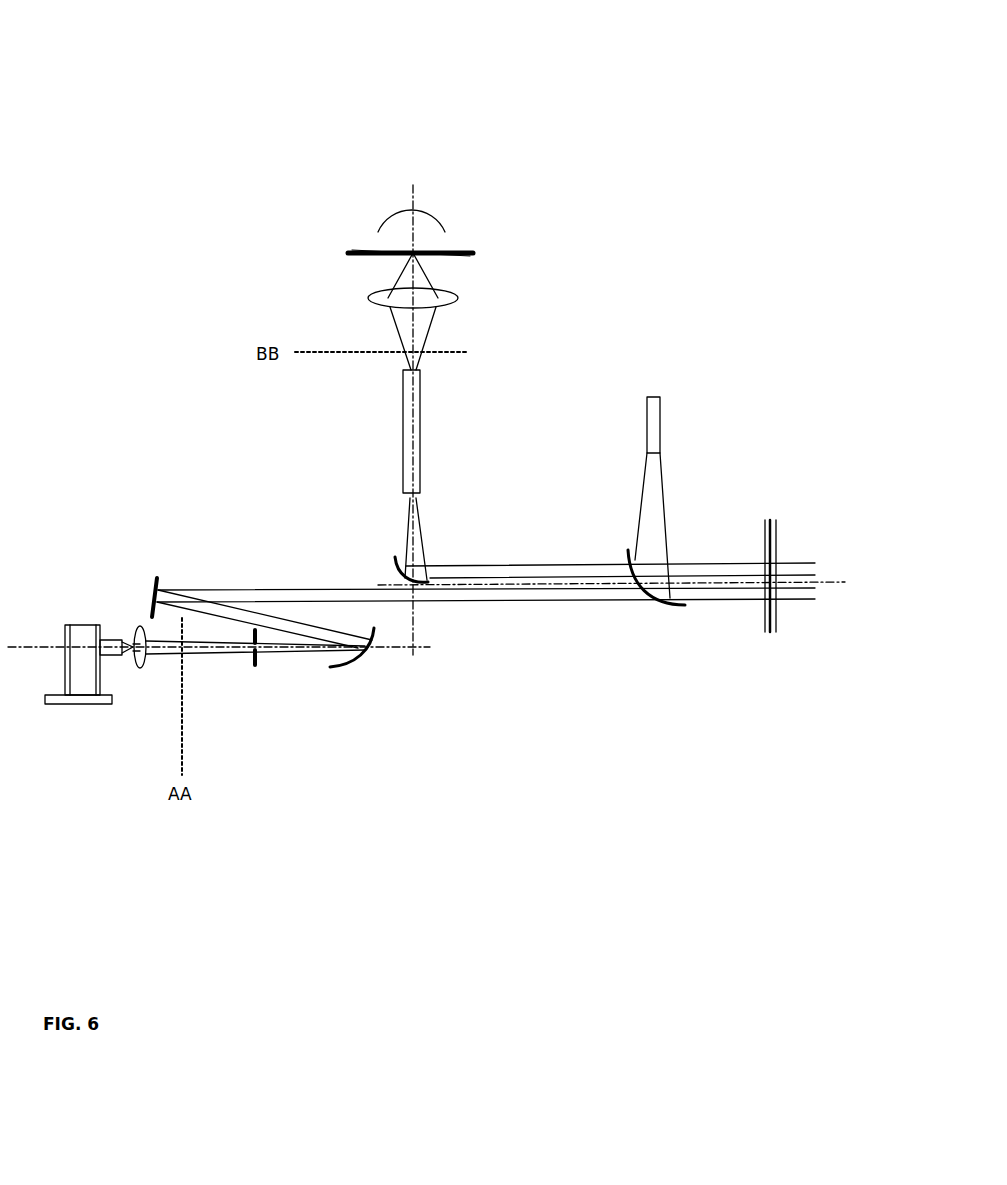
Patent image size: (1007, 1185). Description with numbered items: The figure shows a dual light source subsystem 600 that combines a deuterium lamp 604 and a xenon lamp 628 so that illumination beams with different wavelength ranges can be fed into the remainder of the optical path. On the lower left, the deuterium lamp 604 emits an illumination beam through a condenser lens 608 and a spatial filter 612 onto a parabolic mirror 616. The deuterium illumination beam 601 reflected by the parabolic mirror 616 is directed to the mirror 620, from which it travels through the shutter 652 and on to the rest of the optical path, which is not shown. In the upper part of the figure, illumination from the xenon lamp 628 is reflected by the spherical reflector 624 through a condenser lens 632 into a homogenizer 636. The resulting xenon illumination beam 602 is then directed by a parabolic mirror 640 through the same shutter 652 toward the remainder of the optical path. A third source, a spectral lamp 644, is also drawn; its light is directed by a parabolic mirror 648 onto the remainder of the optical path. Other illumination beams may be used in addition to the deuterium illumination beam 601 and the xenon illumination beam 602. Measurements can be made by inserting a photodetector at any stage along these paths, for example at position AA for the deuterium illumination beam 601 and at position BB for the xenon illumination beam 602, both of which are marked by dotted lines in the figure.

The dual light source subsystem 600 is at (473, 90).
The deuterium illumination beam 601 is at (168, 652).
The xenon illumination beam 602 is at (427, 332).
The deuterium lamp 604 is at (72, 623).
The condenser lens 608 is at (137, 623).
The spatial filter 612 is at (252, 667).
The parabolic mirror 616 is at (367, 650).
The mirror 620 is at (162, 580).
The spherical reflector 624 is at (430, 212).
The xenon lamp 628 is at (348, 255).
The condenser lens 632 is at (370, 299).
The homogenizer 636 is at (403, 420).
The parabolic mirror 640 is at (402, 568).
The spectral lamp 644 is at (647, 425).
The parabolic mirror 648 is at (672, 603).
The shutter 652 is at (776, 520).